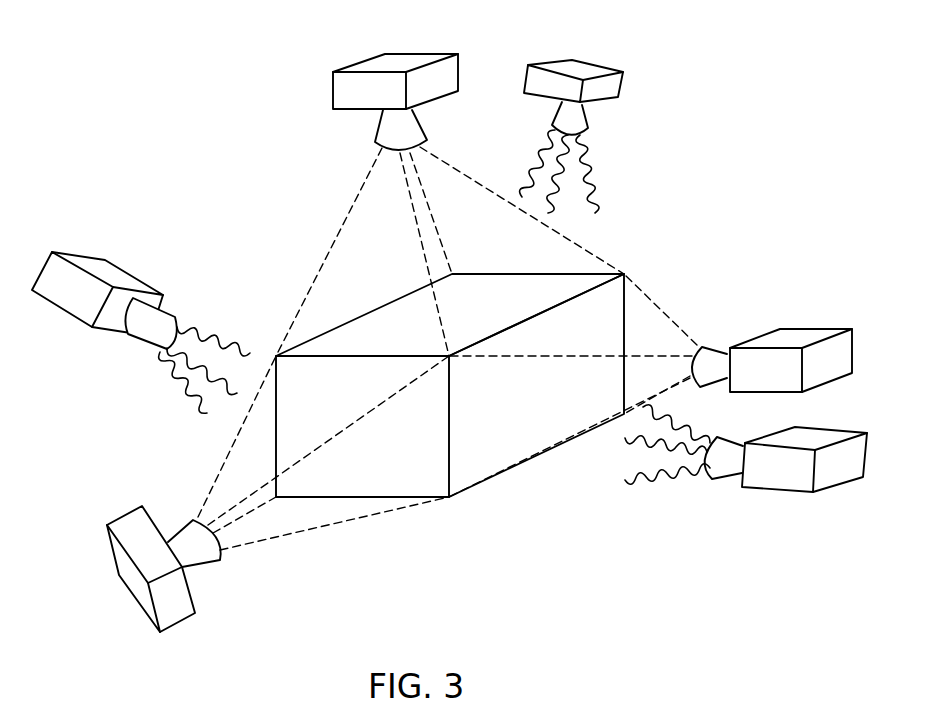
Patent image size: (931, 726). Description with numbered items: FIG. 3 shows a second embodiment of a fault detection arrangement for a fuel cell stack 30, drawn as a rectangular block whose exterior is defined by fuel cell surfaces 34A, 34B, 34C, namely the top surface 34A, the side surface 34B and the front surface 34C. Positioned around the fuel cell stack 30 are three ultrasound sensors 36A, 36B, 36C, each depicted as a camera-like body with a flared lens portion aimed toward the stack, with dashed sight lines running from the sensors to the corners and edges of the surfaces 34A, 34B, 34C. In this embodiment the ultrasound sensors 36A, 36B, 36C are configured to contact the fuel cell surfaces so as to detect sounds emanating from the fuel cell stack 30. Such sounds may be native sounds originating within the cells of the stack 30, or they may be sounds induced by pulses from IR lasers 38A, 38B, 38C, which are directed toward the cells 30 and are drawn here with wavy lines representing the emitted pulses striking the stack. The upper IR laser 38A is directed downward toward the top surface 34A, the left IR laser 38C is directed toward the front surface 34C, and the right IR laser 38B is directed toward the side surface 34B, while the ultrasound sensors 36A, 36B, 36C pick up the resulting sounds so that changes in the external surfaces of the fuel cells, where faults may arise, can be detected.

The fuel cell stack 30 is at (494, 392).
The fuel cell surface 34A is at (500, 282).
The fuel cell surface 34B is at (603, 310).
The fuel cell surface 34C is at (433, 475).
The ultrasound sensor 36A is at (333, 90).
The ultrasound sensor 36B is at (813, 328).
The ultrasound sensor 36C is at (110, 550).
The IR laser 38A is at (620, 85).
The IR laser 38B is at (778, 493).
The IR laser 38C is at (123, 268).